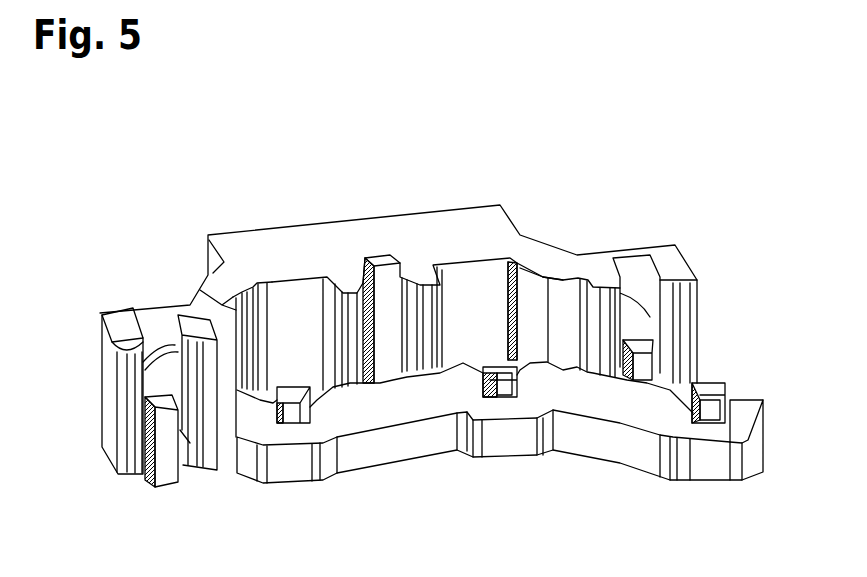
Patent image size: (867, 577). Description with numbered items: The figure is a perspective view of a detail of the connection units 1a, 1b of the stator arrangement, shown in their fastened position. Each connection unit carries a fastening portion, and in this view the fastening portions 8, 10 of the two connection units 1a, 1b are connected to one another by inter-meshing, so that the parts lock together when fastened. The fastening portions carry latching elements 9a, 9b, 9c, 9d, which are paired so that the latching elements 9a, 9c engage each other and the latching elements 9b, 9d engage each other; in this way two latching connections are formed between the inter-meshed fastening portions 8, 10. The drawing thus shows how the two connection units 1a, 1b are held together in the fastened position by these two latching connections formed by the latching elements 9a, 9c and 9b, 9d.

The connection unit 1a is at (403, 445).
The connection unit 1b is at (447, 210).
The fastening portion 8 is at (479, 294).
The latching element 9a is at (577, 363).
The latching element 9b is at (250, 357).
The latching element 9c is at (557, 280).
The latching element 9d is at (271, 298).
The fastening portion 10 is at (411, 218).